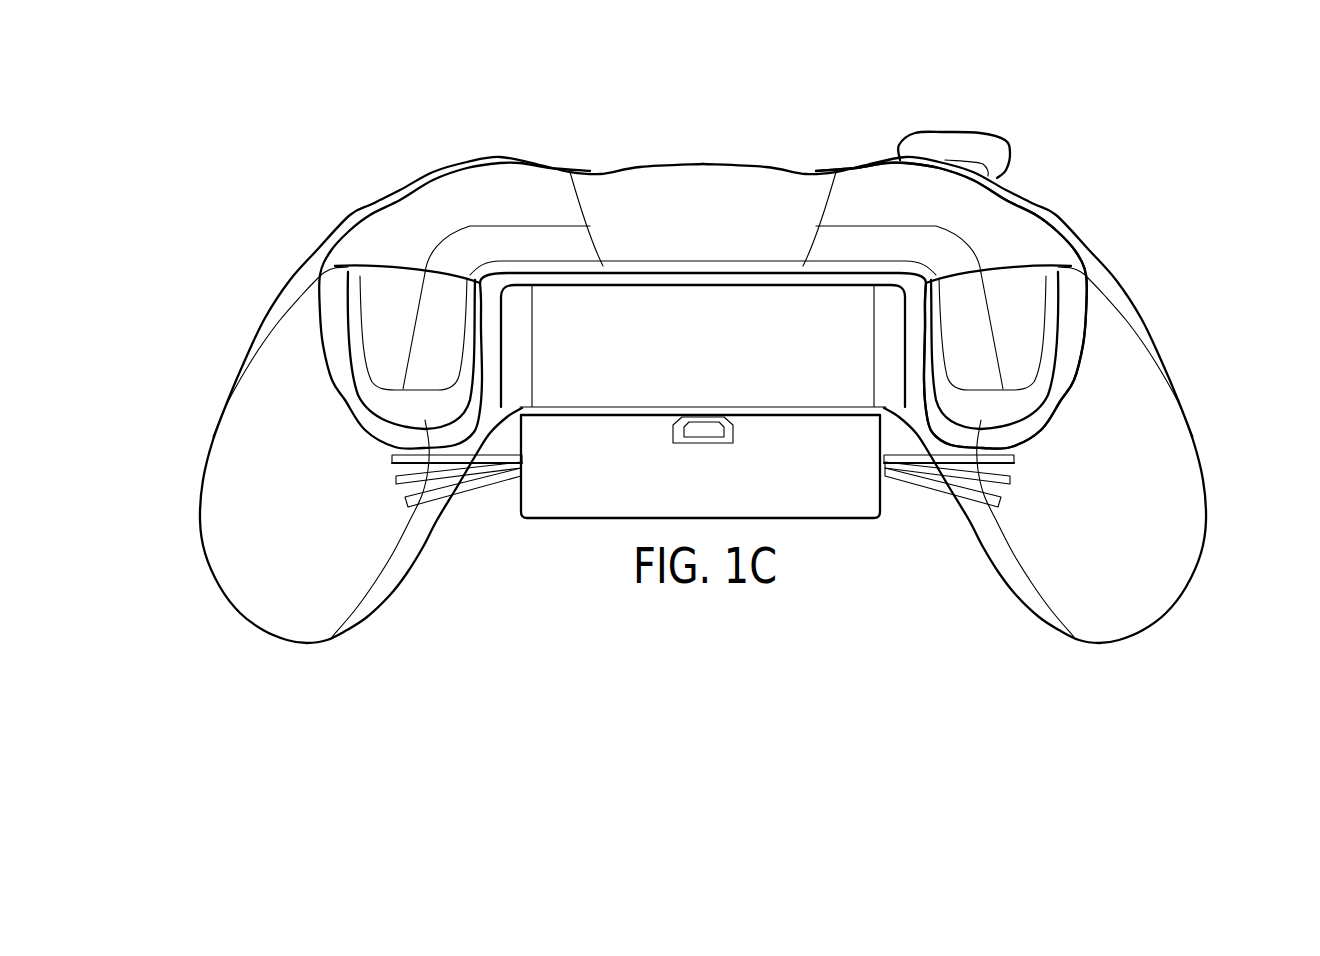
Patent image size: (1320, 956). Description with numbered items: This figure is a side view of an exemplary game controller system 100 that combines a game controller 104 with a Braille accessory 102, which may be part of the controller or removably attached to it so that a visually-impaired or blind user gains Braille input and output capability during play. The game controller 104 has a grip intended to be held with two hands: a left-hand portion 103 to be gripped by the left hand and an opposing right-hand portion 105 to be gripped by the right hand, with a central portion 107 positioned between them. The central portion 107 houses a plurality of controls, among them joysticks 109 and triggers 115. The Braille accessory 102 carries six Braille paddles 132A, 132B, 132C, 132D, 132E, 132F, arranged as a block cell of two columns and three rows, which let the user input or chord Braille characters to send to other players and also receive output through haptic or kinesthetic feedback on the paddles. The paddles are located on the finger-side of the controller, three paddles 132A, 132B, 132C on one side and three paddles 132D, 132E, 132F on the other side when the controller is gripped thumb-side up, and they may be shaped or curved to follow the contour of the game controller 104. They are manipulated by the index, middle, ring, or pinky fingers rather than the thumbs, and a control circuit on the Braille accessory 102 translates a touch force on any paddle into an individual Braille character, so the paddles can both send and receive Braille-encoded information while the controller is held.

The game controller system 100 is at (297, 166).
The Braille accessory 102 is at (836, 536).
The left-hand portion 103 is at (200, 519).
The game controller 104 is at (1146, 290).
The right-hand portion 105 is at (1206, 519).
The central portion 107 is at (722, 212).
The joysticks 109 is at (958, 131).
The triggers 115 is at (362, 363).
The Braille paddle 132A is at (392, 458).
The Braille paddle 132B is at (396, 480).
The Braille paddle 132C is at (405, 502).
The Braille paddle 132D is at (1018, 459).
The Braille paddle 132E is at (1010, 480).
The Braille paddle 132F is at (1001, 502).